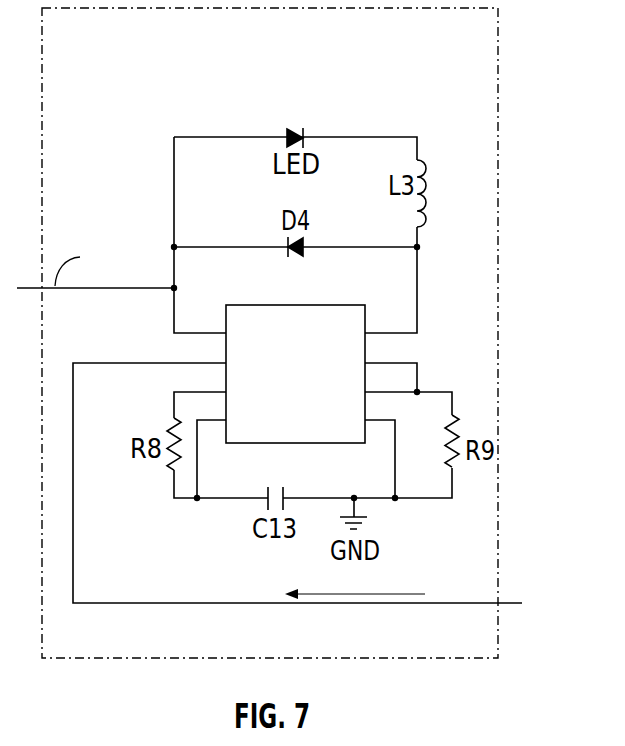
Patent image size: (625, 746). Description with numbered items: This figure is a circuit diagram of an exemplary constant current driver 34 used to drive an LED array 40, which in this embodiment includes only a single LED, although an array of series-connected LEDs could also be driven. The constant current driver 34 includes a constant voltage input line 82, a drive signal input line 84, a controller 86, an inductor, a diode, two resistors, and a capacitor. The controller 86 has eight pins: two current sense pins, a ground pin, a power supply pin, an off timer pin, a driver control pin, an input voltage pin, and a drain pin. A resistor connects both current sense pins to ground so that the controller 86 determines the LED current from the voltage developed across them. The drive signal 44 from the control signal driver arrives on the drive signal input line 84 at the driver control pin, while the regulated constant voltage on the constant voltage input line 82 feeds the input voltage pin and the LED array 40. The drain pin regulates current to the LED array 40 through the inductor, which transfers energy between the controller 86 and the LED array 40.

The constant current driver 34 is at (498, 562).
The LED array 40 is at (316, 112).
The constant voltage input line 82 is at (120, 289).
The controller 86 is at (315, 304).
The drive signal input line 84 is at (263, 605).
The drive signal 44 is at (391, 606).